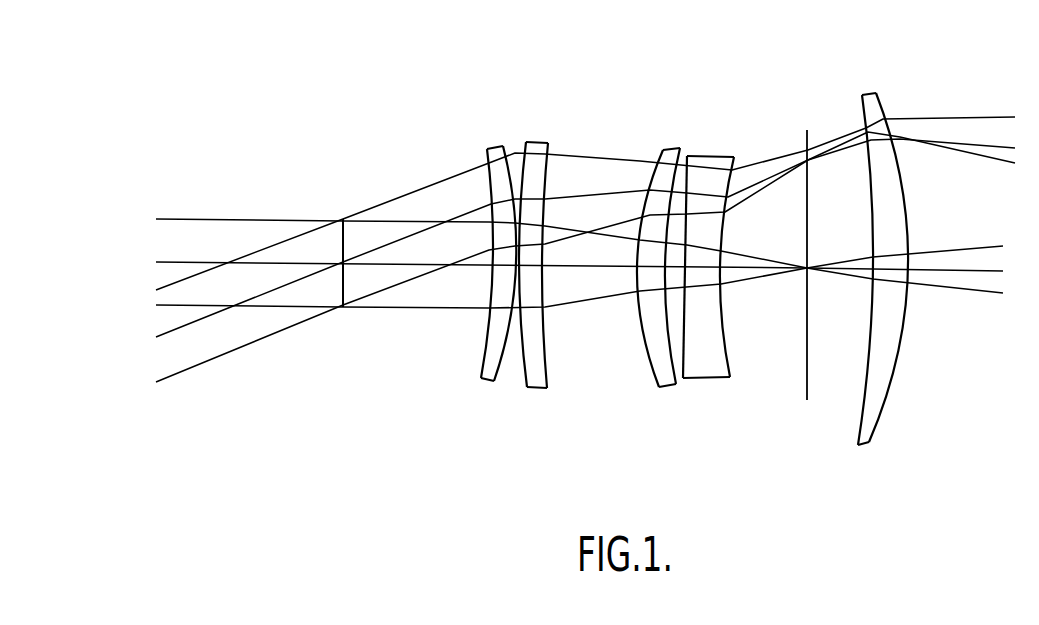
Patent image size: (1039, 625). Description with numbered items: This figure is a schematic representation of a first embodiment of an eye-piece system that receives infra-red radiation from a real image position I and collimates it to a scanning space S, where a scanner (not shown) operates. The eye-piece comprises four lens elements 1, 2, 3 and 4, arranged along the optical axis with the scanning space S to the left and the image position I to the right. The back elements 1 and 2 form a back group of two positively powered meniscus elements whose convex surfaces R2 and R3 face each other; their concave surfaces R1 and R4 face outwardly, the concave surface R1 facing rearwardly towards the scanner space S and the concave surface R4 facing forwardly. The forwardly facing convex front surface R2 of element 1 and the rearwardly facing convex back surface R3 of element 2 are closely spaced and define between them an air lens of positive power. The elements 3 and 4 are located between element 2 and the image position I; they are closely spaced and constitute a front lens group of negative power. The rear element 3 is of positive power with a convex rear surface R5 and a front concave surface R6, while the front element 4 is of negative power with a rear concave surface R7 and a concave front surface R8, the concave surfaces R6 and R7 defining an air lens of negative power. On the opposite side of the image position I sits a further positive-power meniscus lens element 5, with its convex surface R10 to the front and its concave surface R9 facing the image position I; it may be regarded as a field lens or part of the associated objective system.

The back element 1 is at (463, 253).
The front element 2 is at (570, 254).
The rear element 3 is at (674, 250).
The front element 4 is at (734, 272).
The further lens element 5 is at (887, 279).
The concave surface R1 is at (486, 172).
The convex front surface R2 is at (503, 148).
The convex back surface R3 is at (525, 148).
The concave surface R4 is at (551, 168).
The convex rear surface R5 is at (662, 151).
The front concave surface R6 is at (683, 150).
The rear concave surface R7 is at (684, 380).
The concave front surface R8 is at (736, 168).
The concave surface R9 is at (860, 116).
The convex surface R10 is at (882, 112).
The scanning space S is at (344, 311).
The real image position I is at (806, 412).